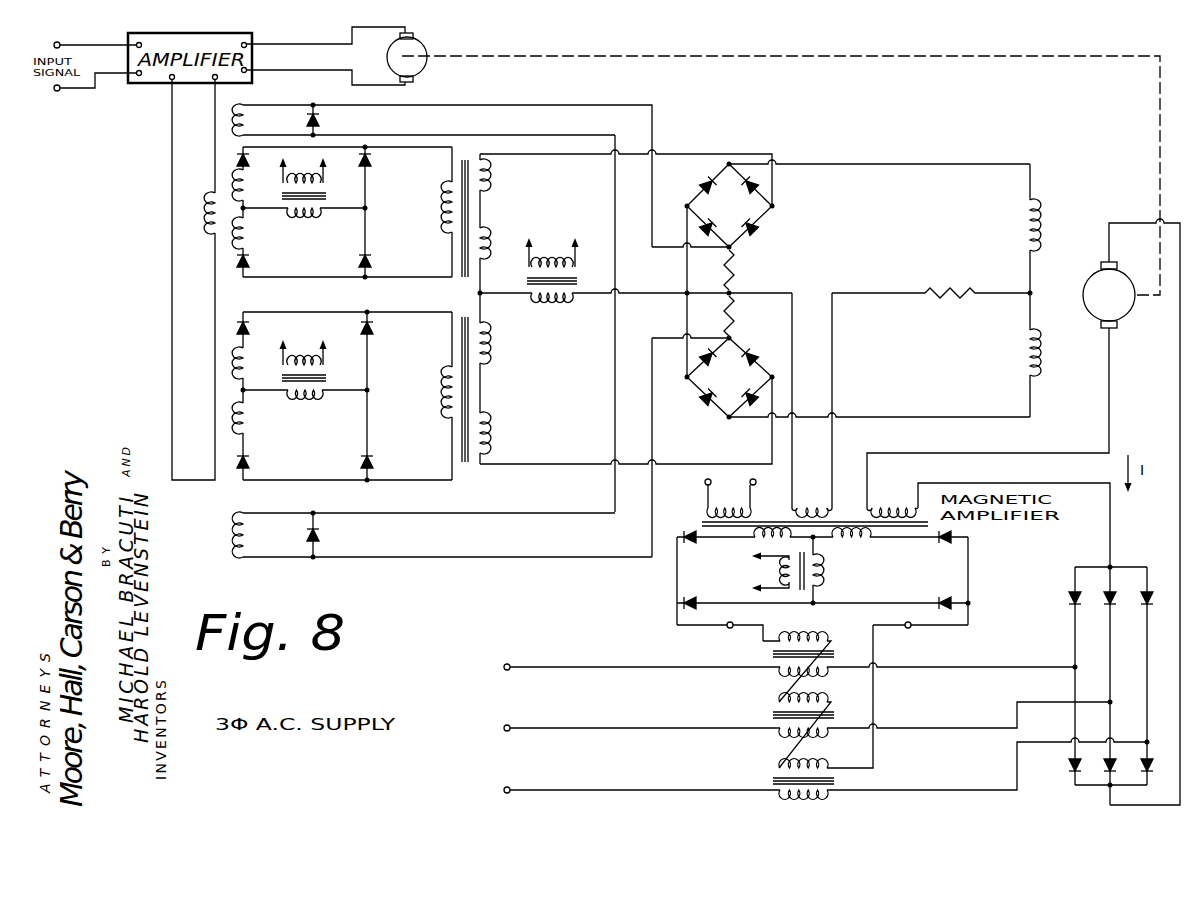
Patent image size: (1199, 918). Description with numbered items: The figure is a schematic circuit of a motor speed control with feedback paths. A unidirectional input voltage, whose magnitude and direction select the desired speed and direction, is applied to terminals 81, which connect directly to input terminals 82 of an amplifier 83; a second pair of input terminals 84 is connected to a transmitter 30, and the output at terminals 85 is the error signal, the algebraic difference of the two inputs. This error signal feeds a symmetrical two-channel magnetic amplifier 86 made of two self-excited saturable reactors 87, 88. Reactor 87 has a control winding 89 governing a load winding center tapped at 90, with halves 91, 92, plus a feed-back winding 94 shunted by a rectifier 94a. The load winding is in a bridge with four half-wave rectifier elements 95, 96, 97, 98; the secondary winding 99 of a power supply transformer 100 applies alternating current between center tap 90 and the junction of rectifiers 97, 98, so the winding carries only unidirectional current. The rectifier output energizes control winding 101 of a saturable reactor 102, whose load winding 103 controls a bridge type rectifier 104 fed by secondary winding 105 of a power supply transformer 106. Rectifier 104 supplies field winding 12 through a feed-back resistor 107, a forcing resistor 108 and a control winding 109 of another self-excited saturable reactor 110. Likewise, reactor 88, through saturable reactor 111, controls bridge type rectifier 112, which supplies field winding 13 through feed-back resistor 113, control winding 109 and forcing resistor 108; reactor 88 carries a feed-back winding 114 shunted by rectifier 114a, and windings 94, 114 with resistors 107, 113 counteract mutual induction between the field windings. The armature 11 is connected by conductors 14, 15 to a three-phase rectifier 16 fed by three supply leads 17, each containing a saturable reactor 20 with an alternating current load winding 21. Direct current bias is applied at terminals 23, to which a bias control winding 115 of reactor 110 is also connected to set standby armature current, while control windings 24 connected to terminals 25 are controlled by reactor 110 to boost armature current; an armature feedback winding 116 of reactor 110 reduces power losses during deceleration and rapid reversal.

The armature 11 is at (1094, 320).
The field winding 12 is at (1025, 224).
The field winding 13 is at (1025, 358).
The conductor 14 is at (1106, 412).
The conductor 15 is at (1178, 425).
The three-phase rectifier 16 is at (1096, 672).
The supply leads 17 is at (504, 666).
The saturable reactor 20 is at (920, 714).
The alternating current load winding 21 is at (822, 674).
The bias terminals 23 is at (705, 485).
The direct-current control windings 24 is at (818, 636).
The terminals 25 is at (735, 622).
The transmitter 30 is at (422, 68).
The input terminals 81 is at (60, 43).
The input terminals of amplifier 82 is at (128, 57).
The amplifier 83 is at (247, 38).
The input terminals of amplifier 84 is at (249, 47).
The output terminals 85 is at (218, 80).
The magnetic amplifier 86 is at (198, 292).
The self-excited saturable reactor 87 is at (214, 163).
The self-excited saturable reactor 88 is at (214, 362).
The control winding 89 is at (207, 222).
The center tap 90 is at (250, 225).
The load winding half 91 is at (248, 190).
The load winding half 92 is at (250, 248).
The feed-back winding 94 is at (252, 124).
The rectifier 94a is at (333, 99).
The half-wave rectifier element 95 is at (250, 263).
The half-wave rectifier element 96 is at (249, 161).
The half-wave rectifier element 97 is at (372, 160).
The half-wave rectifier element 98 is at (372, 263).
The secondary winding 99 is at (308, 214).
The power supply transformer 100 is at (326, 197).
The control winding 101 is at (443, 212).
The saturable reactor 102 is at (342, 212).
The load winding 103 is at (490, 200).
The bridge type rectifier 104 is at (742, 206).
The secondary winding 105 is at (545, 300).
The power supply transformer 106 is at (588, 272).
The feed-back resistor 107 is at (737, 275).
The forcing resistor 108 is at (942, 300).
The control winding 109 is at (818, 505).
The self-excited saturable reactor 110 is at (835, 551).
The saturable reactor 111 is at (470, 473).
The bridge type rectifier 112 is at (722, 402).
The feed-back resistor 113 is at (736, 318).
The feed-back winding 114 is at (236, 545).
The rectifier 114a is at (322, 535).
The bias control winding 115 is at (708, 509).
The armature feedback winding 116 is at (883, 505).